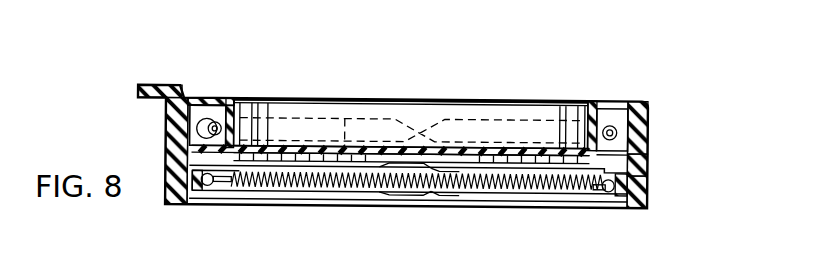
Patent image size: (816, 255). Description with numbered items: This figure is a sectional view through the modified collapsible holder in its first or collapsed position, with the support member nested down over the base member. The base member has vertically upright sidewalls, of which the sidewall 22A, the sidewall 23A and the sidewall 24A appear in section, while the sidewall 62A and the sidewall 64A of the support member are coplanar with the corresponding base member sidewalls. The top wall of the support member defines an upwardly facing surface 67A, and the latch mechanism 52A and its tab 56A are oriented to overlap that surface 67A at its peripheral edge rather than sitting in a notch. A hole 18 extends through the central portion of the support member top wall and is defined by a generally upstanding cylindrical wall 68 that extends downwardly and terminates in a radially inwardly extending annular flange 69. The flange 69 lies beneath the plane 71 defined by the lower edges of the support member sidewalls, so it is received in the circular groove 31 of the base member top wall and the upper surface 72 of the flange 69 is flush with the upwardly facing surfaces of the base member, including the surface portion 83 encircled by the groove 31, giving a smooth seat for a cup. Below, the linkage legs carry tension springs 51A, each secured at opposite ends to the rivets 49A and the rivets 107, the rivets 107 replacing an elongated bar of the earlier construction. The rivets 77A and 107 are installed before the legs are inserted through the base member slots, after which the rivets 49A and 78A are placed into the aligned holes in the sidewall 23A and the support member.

The hole 18 is at (293, 108).
The sidewall 22A is at (174, 182).
The sidewall 23A is at (482, 202).
The sidewall 24A is at (651, 195).
The circular groove 31 is at (248, 147).
The rivets 49A is at (612, 197).
The tension springs 51A is at (379, 187).
The latch mechanism 52A is at (140, 87).
The tab 56A is at (184, 92).
The sidewall 62A is at (175, 118).
The sidewall 64A is at (651, 132).
The upwardly facing surface 67A is at (203, 97).
The cylindrical wall 68 is at (587, 125).
The annular flange 69 is at (548, 106).
The plane 71 is at (651, 169).
The upper surface 72 is at (578, 143).
The rivets 77A is at (208, 129).
The rivets 78A is at (611, 131).
The upwardly facing surface portion 83 is at (334, 146).
The rivets 107 is at (214, 186).